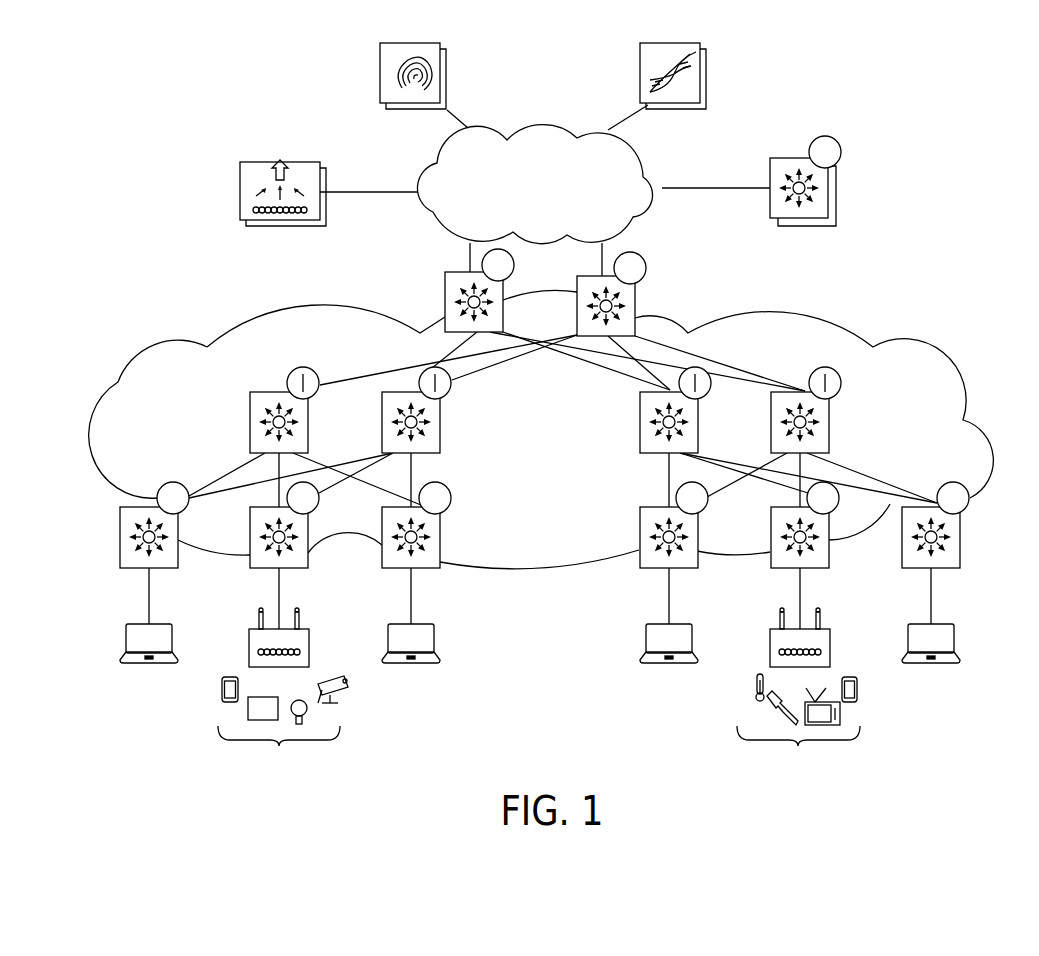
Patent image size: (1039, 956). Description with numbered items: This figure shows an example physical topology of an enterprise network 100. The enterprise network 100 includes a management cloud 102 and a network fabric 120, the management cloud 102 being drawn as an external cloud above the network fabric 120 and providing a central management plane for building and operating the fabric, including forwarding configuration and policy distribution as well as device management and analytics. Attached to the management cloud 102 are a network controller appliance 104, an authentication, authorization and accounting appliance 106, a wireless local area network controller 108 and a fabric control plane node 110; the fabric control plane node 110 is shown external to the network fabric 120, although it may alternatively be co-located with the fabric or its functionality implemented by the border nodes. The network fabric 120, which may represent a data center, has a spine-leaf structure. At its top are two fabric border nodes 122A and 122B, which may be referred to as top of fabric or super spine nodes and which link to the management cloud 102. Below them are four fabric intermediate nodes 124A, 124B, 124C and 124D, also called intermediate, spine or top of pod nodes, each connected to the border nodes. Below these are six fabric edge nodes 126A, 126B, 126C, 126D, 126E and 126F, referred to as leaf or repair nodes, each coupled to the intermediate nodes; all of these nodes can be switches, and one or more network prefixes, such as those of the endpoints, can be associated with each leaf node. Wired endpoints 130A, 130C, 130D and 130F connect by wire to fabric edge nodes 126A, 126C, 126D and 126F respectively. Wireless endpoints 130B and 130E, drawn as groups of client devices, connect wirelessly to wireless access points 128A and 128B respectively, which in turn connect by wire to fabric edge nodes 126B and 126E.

The enterprise network 100 is at (952, 122).
The management cloud 102 is at (425, 165).
The network controller appliance 104 is at (640, 76).
The authentication, authorization, and accounting (AAA) appliance 106 is at (378, 76).
The wireless local area network controller 108 is at (240, 190).
The fabric control plane node 110 is at (770, 170).
The network fabric 120 is at (825, 320).
The fabric border node 122A is at (445, 278).
The fabric border node 122B is at (647, 268).
The fabric intermediate node 124A is at (250, 395).
The fabric intermediate node 124B is at (440, 445).
The fabric intermediate node 124C is at (640, 445).
The fabric intermediate node 124D is at (829, 430).
The fabric edge node 126A is at (120, 540).
The fabric edge node 126B is at (263, 570).
The fabric edge node 126C is at (394, 570).
The fabric edge node 126D is at (640, 540).
The fabric edge node 126E is at (785, 570).
The fabric edge node 126F is at (915, 570).
The wireless access point 128A is at (308, 627).
The wireless access point 128B is at (829, 627).
The wired endpoint 130A is at (126, 643).
The wireless endpoint 130B is at (283, 730).
The wired endpoint 130C is at (435, 640).
The wired endpoint 130D is at (646, 643).
The wireless endpoint 130E is at (798, 729).
The wired endpoint 130F is at (955, 640).